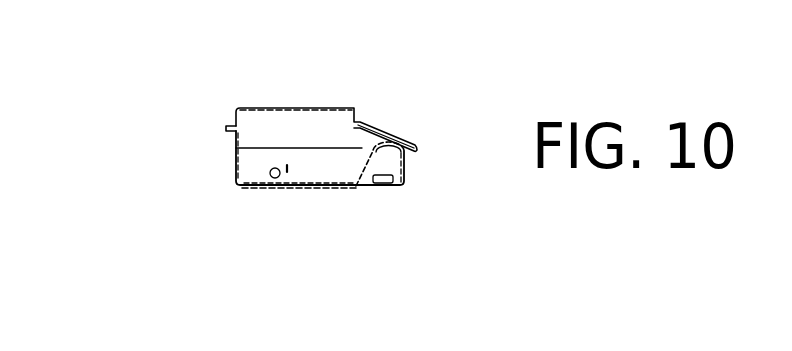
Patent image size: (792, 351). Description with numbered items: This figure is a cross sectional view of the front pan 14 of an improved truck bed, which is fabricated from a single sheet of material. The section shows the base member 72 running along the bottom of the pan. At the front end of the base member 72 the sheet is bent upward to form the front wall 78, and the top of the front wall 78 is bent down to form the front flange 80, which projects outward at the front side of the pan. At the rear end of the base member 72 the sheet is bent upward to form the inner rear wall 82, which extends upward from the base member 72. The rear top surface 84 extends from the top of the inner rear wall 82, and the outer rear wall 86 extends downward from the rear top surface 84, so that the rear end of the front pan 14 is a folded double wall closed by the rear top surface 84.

The front pan 14 is at (403, 122).
The base member 72 is at (307, 185).
The front wall 78 is at (235, 170).
The front flange 80 is at (227, 127).
The inner rear wall 82 is at (362, 167).
The rear top surface 84 is at (383, 133).
The outer rear wall 86 is at (405, 163).